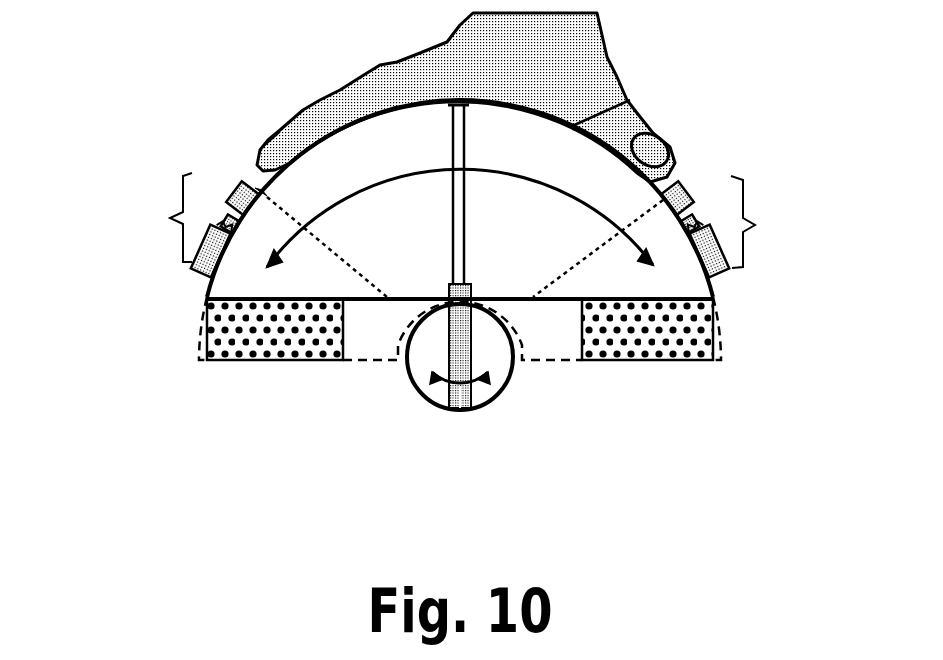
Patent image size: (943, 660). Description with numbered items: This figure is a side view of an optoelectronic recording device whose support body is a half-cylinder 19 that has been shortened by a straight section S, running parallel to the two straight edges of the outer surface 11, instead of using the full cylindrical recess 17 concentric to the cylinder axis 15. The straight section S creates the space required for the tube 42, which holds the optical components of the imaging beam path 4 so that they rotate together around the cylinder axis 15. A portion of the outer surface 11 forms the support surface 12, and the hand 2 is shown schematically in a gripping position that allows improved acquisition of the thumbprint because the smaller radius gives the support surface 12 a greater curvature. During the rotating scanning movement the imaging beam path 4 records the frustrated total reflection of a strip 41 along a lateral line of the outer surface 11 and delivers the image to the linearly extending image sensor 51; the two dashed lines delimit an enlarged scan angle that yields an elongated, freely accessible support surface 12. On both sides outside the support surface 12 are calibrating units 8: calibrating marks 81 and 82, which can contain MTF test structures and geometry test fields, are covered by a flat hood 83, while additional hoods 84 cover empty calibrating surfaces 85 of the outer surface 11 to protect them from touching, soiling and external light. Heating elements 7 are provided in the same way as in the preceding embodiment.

The hand 2 is at (573, 72).
The outer surface 11 is at (580, 127).
The support surface 12 is at (262, 190).
The imaging beam path 4 is at (453, 200).
The strip 41 is at (457, 103).
The tube 42 is at (423, 393).
The heating elements 7 is at (227, 353).
The calibrating units 8 is at (167, 219).
The calibrating mark 81 is at (222, 215).
The calibrating mark 82 is at (700, 213).
The hood 83 is at (240, 190).
The hood 84 is at (203, 268).
The calibrating surface 85 is at (583, 342).
The cylinder axis 15 is at (461, 402).
The cylindrical recess 17 is at (513, 335).
The half-cylinder 19 is at (722, 338).
The image sensor 51 is at (470, 397).
The straight section S is at (410, 300).